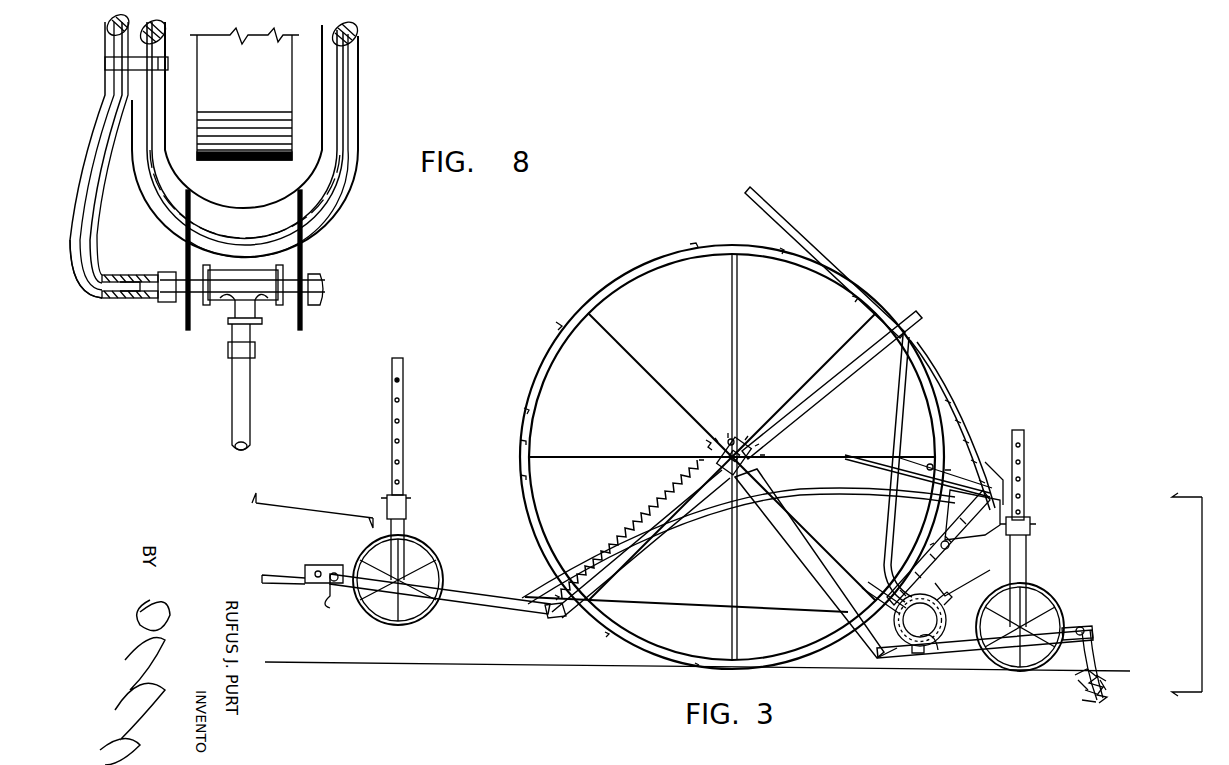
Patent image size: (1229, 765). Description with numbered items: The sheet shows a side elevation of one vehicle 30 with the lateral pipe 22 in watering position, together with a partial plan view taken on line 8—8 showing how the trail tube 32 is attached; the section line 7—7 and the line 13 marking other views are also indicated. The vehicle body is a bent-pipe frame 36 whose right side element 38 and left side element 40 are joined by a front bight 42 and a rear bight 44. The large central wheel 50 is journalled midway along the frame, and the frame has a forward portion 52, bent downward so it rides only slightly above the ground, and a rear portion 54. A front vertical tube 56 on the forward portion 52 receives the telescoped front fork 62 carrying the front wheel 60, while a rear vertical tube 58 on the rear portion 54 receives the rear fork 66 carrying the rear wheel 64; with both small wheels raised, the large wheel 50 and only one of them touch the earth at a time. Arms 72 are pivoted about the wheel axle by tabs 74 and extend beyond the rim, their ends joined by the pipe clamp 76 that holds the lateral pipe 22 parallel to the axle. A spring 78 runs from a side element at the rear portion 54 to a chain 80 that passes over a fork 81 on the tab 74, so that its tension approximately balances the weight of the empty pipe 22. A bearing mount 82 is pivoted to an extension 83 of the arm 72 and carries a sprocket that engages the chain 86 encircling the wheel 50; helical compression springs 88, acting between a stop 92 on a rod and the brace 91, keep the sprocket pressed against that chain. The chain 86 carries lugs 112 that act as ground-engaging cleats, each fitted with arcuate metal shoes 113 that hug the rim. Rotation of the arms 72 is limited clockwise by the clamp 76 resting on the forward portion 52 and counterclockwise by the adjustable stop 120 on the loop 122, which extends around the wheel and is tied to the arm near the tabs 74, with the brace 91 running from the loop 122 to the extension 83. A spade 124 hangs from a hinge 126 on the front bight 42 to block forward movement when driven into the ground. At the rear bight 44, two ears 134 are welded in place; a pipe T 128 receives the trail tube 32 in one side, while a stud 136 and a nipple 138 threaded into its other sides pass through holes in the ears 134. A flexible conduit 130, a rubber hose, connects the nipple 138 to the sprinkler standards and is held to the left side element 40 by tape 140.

In FIG. 3, the section line 7- 7 is at (1173, 594).
In FIG. 3, the section line 8- 8 is at (309, 518).
In FIG. 3, the section line 13- 13 is at (969, 515).
In FIG. 3, the lateral pipe 22 is at (935, 648).
In FIG. 3, the vehicle 30 is at (884, 676).
In FIG. 8, the trail tube 32 is at (252, 392).
In FIG. 3, the trail tube 32 is at (275, 582).
In FIG. 3, the frame 36 is at (792, 552).
In FIG. 8, the right side element 38 is at (352, 100).
In FIG. 3, the right side element 38 is at (550, 620).
In FIG. 8, the left side element 40 is at (160, 122).
In FIG. 3, the front bight 42 is at (1070, 625).
In FIG. 8, the rear bight 44 is at (230, 212).
In FIG. 3, the rear bight 44 is at (332, 600).
In FIG. 3, the large central wheel 50 is at (548, 352).
In FIG. 3, the forward portion of the frame 52 is at (962, 660).
In FIG. 3, the rear portion of the frame 54 is at (486, 620).
In FIG. 3, the front vertical tube 56 is at (1040, 538).
In FIG. 3, the rear vertical tube 58 is at (408, 518).
In FIG. 3, the front wheel 60 is at (1052, 590).
In FIG. 3, the front fork 62 is at (1026, 480).
In FIG. 8, the rear wheel 64 is at (250, 80).
In FIG. 3, the rear wheel 64 is at (444, 575).
In FIG. 3, the rear fork 66 is at (404, 444).
In FIG. 3, the arm 72 is at (802, 530).
In FIG. 3, the tab 74 is at (760, 465).
In FIG. 3, the pipe clamp 76 is at (955, 612).
In FIG. 3, the spring 78 is at (605, 520).
In FIG. 3, the chain 80 is at (708, 442).
In FIG. 3, the fork 81 is at (729, 436).
In FIG. 3, the bearing mount 82 is at (930, 537).
In FIG. 3, the extension 83 is at (880, 576).
In FIG. 3, the chain 86 is at (975, 440).
In FIG. 3, the helical compression spring 88 is at (882, 466).
In FIG. 3, the brace 91 is at (896, 395).
In FIG. 3, the stop 92 is at (932, 455).
In FIG. 3, the lug 112 is at (552, 330).
In FIG. 3, the arcuate metal shoe 113 is at (525, 406).
In FIG. 3, the stop 120 is at (838, 258).
In FIG. 3, the loop 122 is at (818, 420).
In FIG. 3, the spade 124 is at (1095, 658).
In FIG. 3, the hinge 126 is at (1085, 628).
In FIG. 8, the pipe T 128 is at (268, 300).
In FIG. 8, the flexible conduit 130 is at (100, 232).
In FIG. 3, the flexible conduit 130 is at (660, 538).
In FIG. 8, the ear 134 is at (185, 256).
In FIG. 3, the ear 134 is at (325, 562).
In FIG. 8, the stud 136 is at (328, 290).
In FIG. 3, the stud 136 is at (330, 584).
In FIG. 8, the nipple 138 is at (162, 304).
In FIG. 8, the tape 140 is at (105, 63).